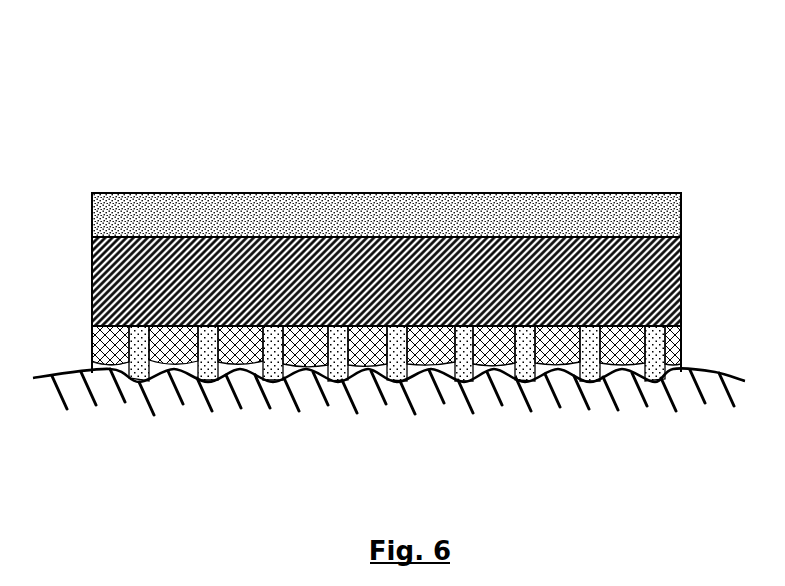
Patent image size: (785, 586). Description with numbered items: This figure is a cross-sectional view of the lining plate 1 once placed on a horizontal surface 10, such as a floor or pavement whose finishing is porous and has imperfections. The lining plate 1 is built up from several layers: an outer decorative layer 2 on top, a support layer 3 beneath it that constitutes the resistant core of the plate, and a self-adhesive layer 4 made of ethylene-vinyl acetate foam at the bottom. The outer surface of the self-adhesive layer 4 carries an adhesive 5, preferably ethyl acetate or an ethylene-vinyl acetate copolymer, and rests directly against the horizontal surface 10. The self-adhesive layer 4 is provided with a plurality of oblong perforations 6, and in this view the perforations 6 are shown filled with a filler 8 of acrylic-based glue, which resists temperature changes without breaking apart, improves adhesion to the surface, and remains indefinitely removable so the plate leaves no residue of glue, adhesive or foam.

The lining plate 1 is at (357, 95).
The outer decorative layer 2 is at (658, 216).
The support layer 3 is at (662, 288).
The self-adhesive layer 4 is at (390, 392).
The adhesive 5 is at (105, 370).
The perforations 6 is at (115, 342).
The filler 8 is at (138, 362).
The horizontal surface 10 is at (252, 392).